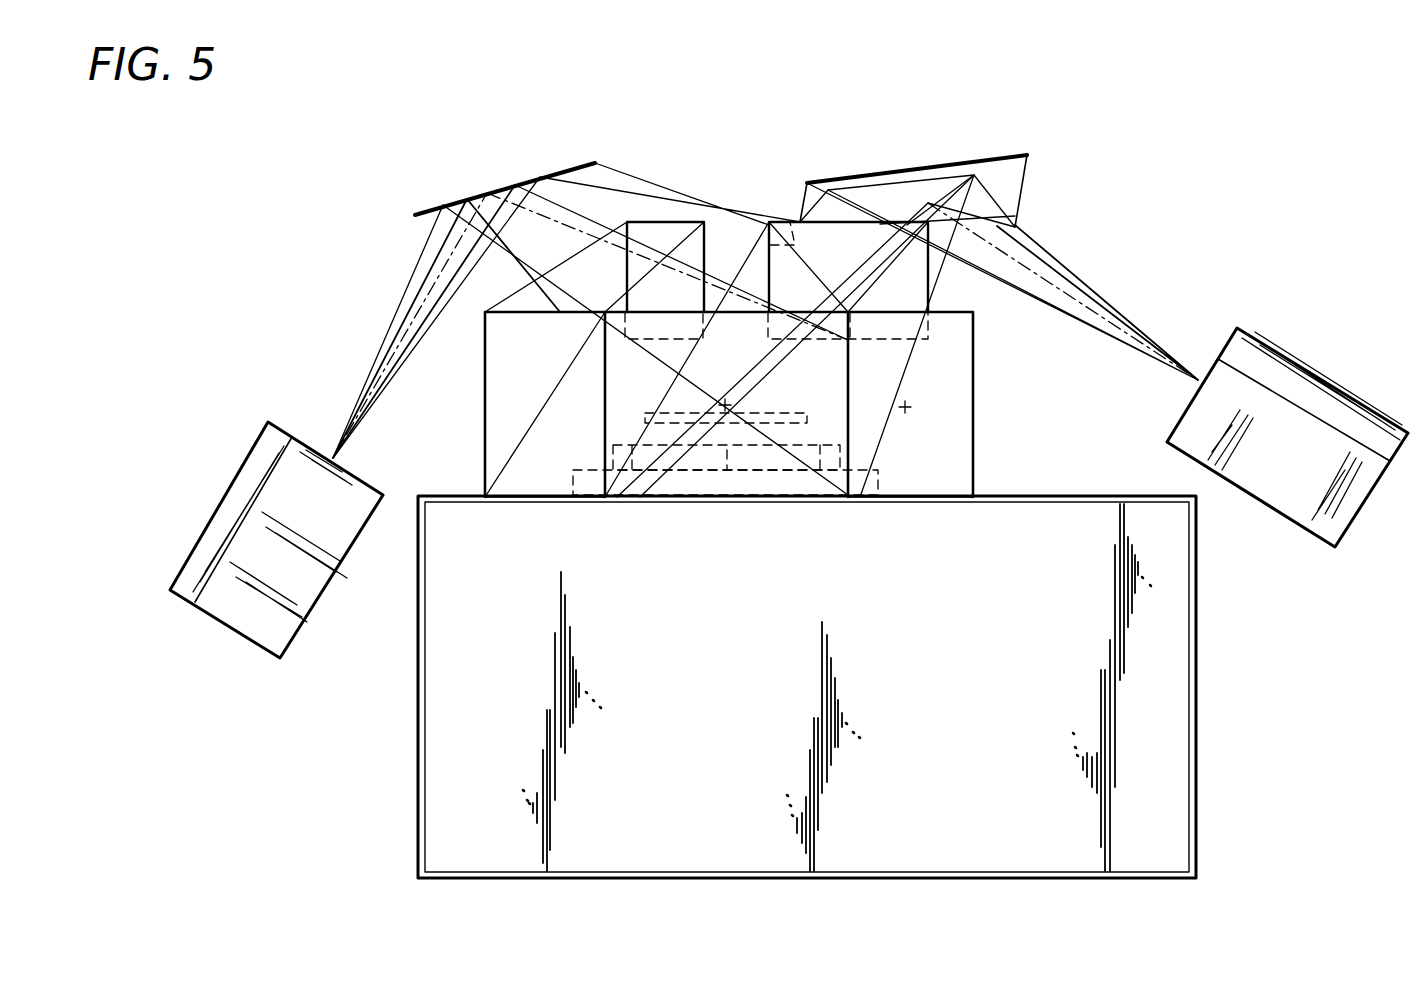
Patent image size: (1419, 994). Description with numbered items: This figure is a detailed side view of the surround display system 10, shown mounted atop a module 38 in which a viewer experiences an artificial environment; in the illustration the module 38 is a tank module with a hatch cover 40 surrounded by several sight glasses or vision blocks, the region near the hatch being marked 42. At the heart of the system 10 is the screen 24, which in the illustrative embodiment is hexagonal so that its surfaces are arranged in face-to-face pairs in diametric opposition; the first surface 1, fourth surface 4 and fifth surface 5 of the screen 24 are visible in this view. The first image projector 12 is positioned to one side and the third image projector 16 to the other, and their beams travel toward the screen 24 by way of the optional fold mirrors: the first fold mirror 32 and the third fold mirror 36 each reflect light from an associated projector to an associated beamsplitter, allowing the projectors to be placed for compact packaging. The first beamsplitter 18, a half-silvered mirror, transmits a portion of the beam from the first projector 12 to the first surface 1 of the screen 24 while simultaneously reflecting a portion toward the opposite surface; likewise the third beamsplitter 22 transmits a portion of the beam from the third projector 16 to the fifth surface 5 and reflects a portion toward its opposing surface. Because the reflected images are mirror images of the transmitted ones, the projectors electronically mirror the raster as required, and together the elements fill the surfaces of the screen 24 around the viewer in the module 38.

The surround display system 10 is at (1142, 151).
The first surface 1 is at (657, 485).
The fourth surface 4 is at (497, 413).
The fifth surface 5 is at (948, 437).
The first image projector 12 is at (1292, 372).
The third image projector 16 is at (223, 503).
The first beamsplitter 18 is at (770, 225).
The third beamsplitter 22 is at (655, 235).
The screen 24 is at (976, 379).
The first fold mirror 32 is at (885, 176).
The third fold mirror 36 is at (466, 197).
The module 38 is at (1190, 713).
The hatch cover 40 is at (708, 423).
The scan line region 42 is at (753, 463).